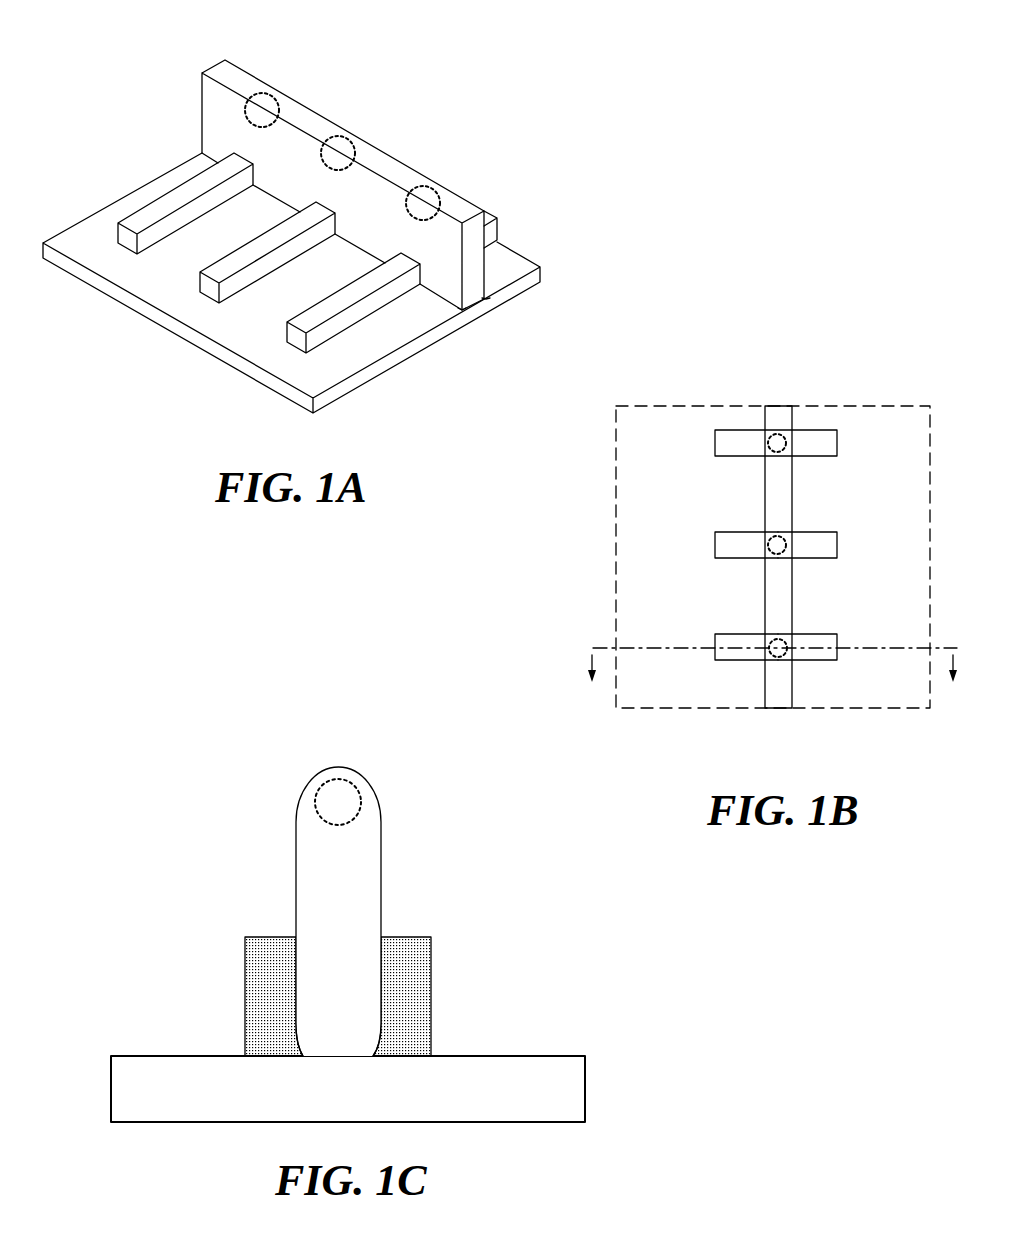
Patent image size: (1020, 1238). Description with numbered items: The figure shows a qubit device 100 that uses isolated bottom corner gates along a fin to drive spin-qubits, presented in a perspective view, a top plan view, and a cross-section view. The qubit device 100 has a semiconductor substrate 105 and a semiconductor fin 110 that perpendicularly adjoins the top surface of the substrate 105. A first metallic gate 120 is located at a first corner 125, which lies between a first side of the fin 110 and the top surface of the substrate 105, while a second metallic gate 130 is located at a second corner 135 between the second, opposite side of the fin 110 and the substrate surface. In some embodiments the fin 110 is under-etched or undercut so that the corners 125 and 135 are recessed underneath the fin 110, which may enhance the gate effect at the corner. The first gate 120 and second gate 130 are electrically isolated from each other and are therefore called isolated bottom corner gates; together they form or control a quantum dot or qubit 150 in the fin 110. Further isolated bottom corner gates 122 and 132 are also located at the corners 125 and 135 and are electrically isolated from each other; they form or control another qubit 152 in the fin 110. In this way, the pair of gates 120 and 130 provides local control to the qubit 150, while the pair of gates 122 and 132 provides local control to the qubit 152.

In FIG. 1A, the qubit device 100 is at (476, 88).
In FIG. 1B, the qubit device 100 is at (890, 375).
In FIG. 1C, the qubit device 100 is at (202, 831).
In FIG. 1A, the semiconductor substrate 105 is at (198, 338).
In FIG. 1B, the semiconductor substrate 105 is at (682, 446).
In FIG. 1C, the semiconductor substrate 105 is at (548, 1112).
In FIG. 1A, the semiconductor fin 110 is at (455, 207).
In FIG. 1B, the semiconductor fin 110 is at (776, 422).
In FIG. 1C, the semiconductor fin 110 is at (350, 917).
In FIG. 1A, the first metallic gate 120 is at (350, 322).
In FIG. 1B, the first metallic gate 120 is at (735, 633).
In FIG. 1C, the first metallic gate 120 is at (265, 977).
In FIG. 1A, the isolated bottom corner gate 122 is at (212, 287).
In FIG. 1B, the isolated bottom corner gate 122 is at (737, 532).
In FIG. 1A, the first corner 125 is at (462, 312).
In FIG. 1C, the first corner 125 is at (299, 1038).
In FIG. 1A, the second metallic gate 130 is at (490, 237).
In FIG. 1B, the second metallic gate 130 is at (827, 633).
In FIG. 1C, the second metallic gate 130 is at (407, 970).
In FIG. 1B, the isolated bottom corner gate 132 is at (820, 532).
In FIG. 1A, the second corner 135 is at (486, 298).
In FIG. 1C, the second corner 135 is at (373, 1045).
In FIG. 1A, the quantum dot or qubit 150 is at (424, 190).
In FIG. 1B, the quantum dot or qubit 150 is at (780, 660).
In FIG. 1C, the quantum dot or qubit 150 is at (345, 802).
In FIG. 1A, the quantum dot or qubit 152 is at (338, 142).
In FIG. 1B, the quantum dot or qubit 152 is at (773, 548).